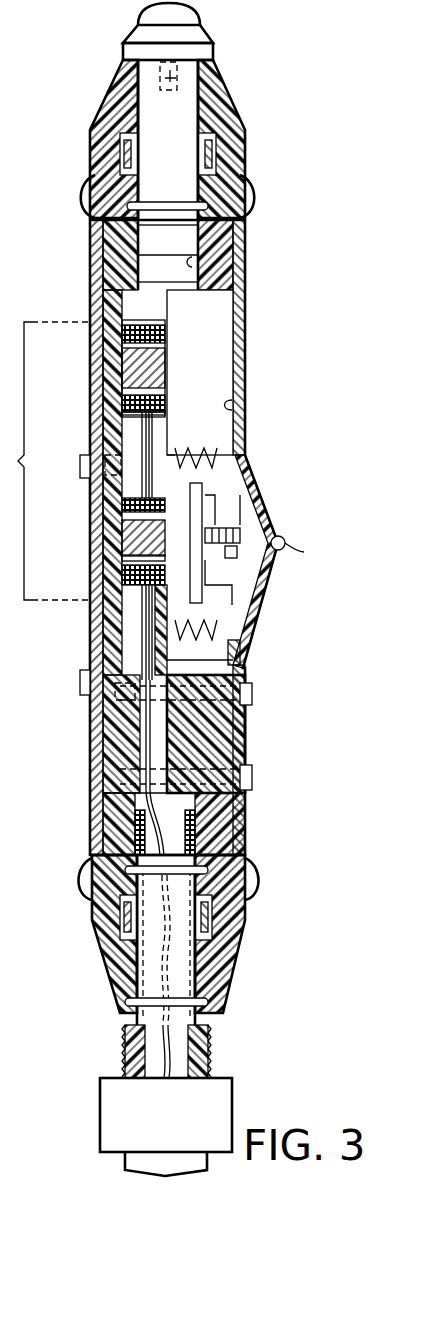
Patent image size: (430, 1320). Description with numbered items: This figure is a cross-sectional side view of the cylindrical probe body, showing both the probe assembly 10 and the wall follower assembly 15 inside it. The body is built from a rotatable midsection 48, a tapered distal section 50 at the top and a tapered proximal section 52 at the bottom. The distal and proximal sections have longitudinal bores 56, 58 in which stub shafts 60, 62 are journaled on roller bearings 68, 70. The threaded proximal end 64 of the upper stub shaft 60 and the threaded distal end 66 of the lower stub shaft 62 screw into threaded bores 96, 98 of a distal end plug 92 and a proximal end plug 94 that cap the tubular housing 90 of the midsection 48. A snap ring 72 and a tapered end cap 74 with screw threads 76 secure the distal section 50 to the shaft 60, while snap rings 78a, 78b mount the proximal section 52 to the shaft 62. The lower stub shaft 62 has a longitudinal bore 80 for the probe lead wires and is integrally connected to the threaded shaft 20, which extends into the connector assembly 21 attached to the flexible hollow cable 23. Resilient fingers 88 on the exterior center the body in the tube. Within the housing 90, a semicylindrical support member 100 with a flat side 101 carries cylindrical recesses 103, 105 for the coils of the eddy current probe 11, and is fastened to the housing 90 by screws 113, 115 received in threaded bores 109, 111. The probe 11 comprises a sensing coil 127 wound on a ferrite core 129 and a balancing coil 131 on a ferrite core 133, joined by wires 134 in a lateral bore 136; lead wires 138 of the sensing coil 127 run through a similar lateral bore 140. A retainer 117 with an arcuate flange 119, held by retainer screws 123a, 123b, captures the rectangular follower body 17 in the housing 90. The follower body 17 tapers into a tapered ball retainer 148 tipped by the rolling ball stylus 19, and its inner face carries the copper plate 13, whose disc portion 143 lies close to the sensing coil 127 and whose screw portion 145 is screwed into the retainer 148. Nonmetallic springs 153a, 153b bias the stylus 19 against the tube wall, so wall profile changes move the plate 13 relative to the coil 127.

The probe assembly 10 is at (45, 461).
The eddy current probe 11 is at (185, 522).
The copper plate 13 is at (226, 600).
The wall follower assembly 15 is at (274, 512).
The follower body 17 is at (257, 480).
The rolling ball stylus 19 is at (290, 537).
The threaded shaft 20 is at (210, 1050).
The connector assembly 21 is at (178, 1129).
The flexible hollow cable 23 is at (140, 1160).
The rotatable midsection 48 is at (250, 353).
The tapered distal section 50 is at (240, 98).
The tapered proximal section 52 is at (242, 985).
The longitudinal bore 56 is at (205, 196).
The longitudinal bore 58 is at (215, 956).
The stub shaft 60 is at (165, 120).
The stub shaft 62 is at (140, 958).
The proximal end 64 is at (168, 243).
The distal end 66 is at (135, 828).
The roller bearing 68 is at (225, 165).
The roller bearing 70 is at (215, 926).
The snap ring 72 is at (152, 202).
The tapered end cap 74 is at (150, 20).
The screw threads 76 is at (188, 78).
The snap ring 78a is at (235, 896).
The snap ring 78b is at (202, 1008).
The longitudinal bore 80 is at (160, 946).
The resilient fingers 88 is at (86, 196).
The tubular housing 90 is at (234, 405).
The distal end plug 92 is at (118, 272).
The proximal end plug 94 is at (108, 801).
The threaded bore 96 is at (180, 266).
The threaded bore 98 is at (135, 840).
The semicylindrical support member 100 is at (92, 656).
The flat side 101 is at (175, 308).
The cylindrical recess 103 is at (140, 586).
The cylindrical recess 105 is at (120, 322).
The threaded bore 109 is at (110, 432).
The threaded bore 111 is at (118, 690).
The screw 113 is at (82, 468).
The screw 115 is at (82, 683).
The retainer 117 is at (250, 726).
The arcuate flange 119 is at (241, 641).
The retainer screw 123a is at (253, 692).
The retainer screw 123b is at (253, 777).
The sensing coil 127 is at (140, 520).
The ferrite core 129 is at (142, 556).
The balancing coil 131 is at (168, 340).
The ferrite core 133 is at (168, 378).
The wires 134 is at (142, 440).
The lateral bore 136 is at (127, 438).
The lead wires 138 is at (142, 710).
The lateral bore 140 is at (118, 630).
The disc portion 143 is at (212, 580).
The screw portion 145 is at (241, 552).
The tapered ball retainer 148 is at (296, 545).
The nonmetallic spring 153a is at (206, 440).
The nonmetallic spring 153b is at (206, 650).